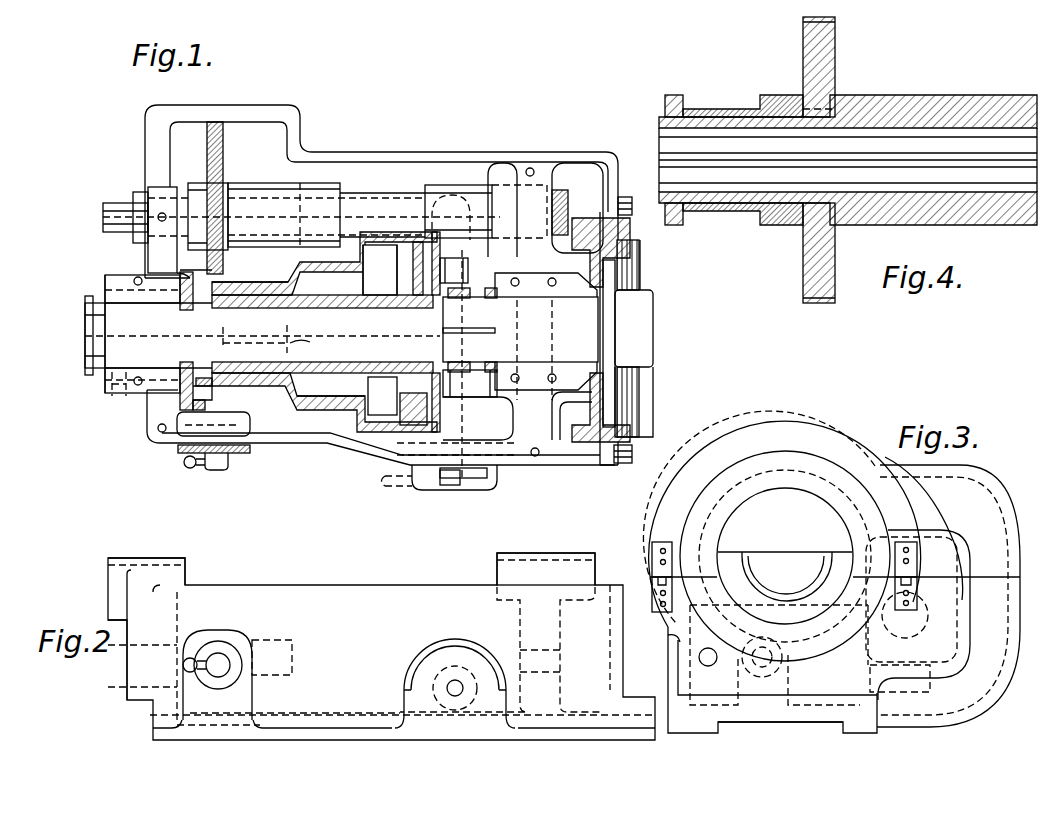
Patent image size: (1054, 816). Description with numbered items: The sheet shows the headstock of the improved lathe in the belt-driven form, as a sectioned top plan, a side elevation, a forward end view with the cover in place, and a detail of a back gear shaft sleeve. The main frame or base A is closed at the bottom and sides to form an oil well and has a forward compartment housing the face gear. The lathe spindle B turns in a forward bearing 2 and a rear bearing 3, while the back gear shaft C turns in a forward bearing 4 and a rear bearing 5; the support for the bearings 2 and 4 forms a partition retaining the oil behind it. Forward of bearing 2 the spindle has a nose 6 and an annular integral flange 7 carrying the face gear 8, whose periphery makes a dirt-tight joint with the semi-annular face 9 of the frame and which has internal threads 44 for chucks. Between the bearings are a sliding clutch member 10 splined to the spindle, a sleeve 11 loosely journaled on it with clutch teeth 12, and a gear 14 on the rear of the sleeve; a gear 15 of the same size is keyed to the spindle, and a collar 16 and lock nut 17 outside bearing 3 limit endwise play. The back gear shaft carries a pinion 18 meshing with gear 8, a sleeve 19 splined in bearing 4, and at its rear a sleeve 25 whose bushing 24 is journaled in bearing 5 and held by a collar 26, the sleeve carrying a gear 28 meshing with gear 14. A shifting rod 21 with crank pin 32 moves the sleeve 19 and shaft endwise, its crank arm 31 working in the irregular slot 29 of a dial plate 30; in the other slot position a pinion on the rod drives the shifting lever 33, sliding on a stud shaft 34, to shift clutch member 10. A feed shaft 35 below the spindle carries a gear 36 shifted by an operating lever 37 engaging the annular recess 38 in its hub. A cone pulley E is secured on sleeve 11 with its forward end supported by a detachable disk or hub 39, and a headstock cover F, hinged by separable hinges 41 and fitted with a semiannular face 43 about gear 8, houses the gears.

In FIG. 1, the forward bearing 2 is at (540, 392).
In FIG. 2, the forward bearing 2 is at (540, 553).
In FIG. 3, the forward bearing 2 is at (760, 592).
In FIG. 1, the rear bearing 3 is at (120, 290).
In FIG. 2, the rear bearing 3 is at (115, 558).
In FIG. 1, the forward bearing 4 is at (520, 185).
In FIG. 1, the rear bearing 5 is at (158, 185).
In FIG. 1, the nose 6 is at (640, 300).
In FIG. 1, the annular integral flange 7 is at (612, 343).
In FIG. 1, the face gear 8 is at (630, 230).
In FIG. 1, the semi-annular face 9 is at (620, 212).
In FIG. 3, the semi-annular face 9 is at (822, 652).
In FIG. 1, the sliding clutch member 10 is at (475, 304).
In FIG. 1, the sleeve 11 is at (345, 308).
In FIG. 1, the clutch teeth 12 is at (432, 306).
In FIG. 1, the gear 14 is at (225, 272).
In FIG. 1, the gear 15 is at (170, 268).
In FIG. 1, the collar 16 is at (110, 290).
In FIG. 1, the lock nut 17 is at (82, 302).
In FIG. 1, the pinion 18 is at (560, 190).
In FIG. 1, the sleeve 19 is at (470, 185).
In FIG. 1, the shifting rod 21 is at (430, 388).
In FIG. 1, the bushing 24 is at (196, 183).
In FIG. 4, the bushing 24 is at (770, 92).
In FIG. 1, the sleeve 25 is at (318, 183).
In FIG. 4, the sleeve 25 is at (893, 93).
In FIG. 1, the collar 26 is at (133, 180).
In FIG. 4, the collar 26 is at (680, 95).
In FIG. 1, the gear 28 is at (226, 145).
In FIG. 4, the gear 28 is at (836, 65).
In FIG. 1, the irregular slot 29 is at (478, 480).
In FIG. 1, the dial plate 30 is at (495, 490).
In FIG. 2, the dial plate 30 is at (415, 652).
In FIG. 1, the crank arm 31 is at (452, 485).
In FIG. 1, the crank pin 32 is at (470, 262).
In FIG. 1, the shifting lever 33 is at (478, 408).
In FIG. 1, the stud shaft 34 is at (570, 420).
In FIG. 3, the stud shaft 34 is at (708, 666).
In FIG. 1, the feed shaft 35 is at (110, 398).
In FIG. 3, the feed shaft 35 is at (758, 672).
In FIG. 1, the gear 36 is at (180, 408).
In FIG. 1, the operating lever 37 is at (175, 462).
In FIG. 2, the operating lever 37 is at (192, 672).
In FIG. 1, the annular recess 38 is at (212, 396).
In FIG. 1, the detachable disk or hub 39 is at (410, 395).
In FIG. 1, the separable hinges 41 is at (634, 208).
In FIG. 3, the separable hinges 41 is at (652, 583).
In FIG. 3, the semiannular face 43 is at (790, 456).
In FIG. 1, the internal threads 44 is at (638, 265).
In FIG. 1, the main frame or base A is at (400, 152).
In FIG. 2, the main frame or base A is at (352, 585).
In FIG. 3, the main frame or base A is at (808, 722).
In FIG. 1, the lathe spindle B is at (85, 325).
In FIG. 1, the back gear shaft C is at (103, 222).
In FIG. 3, the back gear shaft C is at (918, 625).
In FIG. 3, the headstock cover F is at (782, 422).